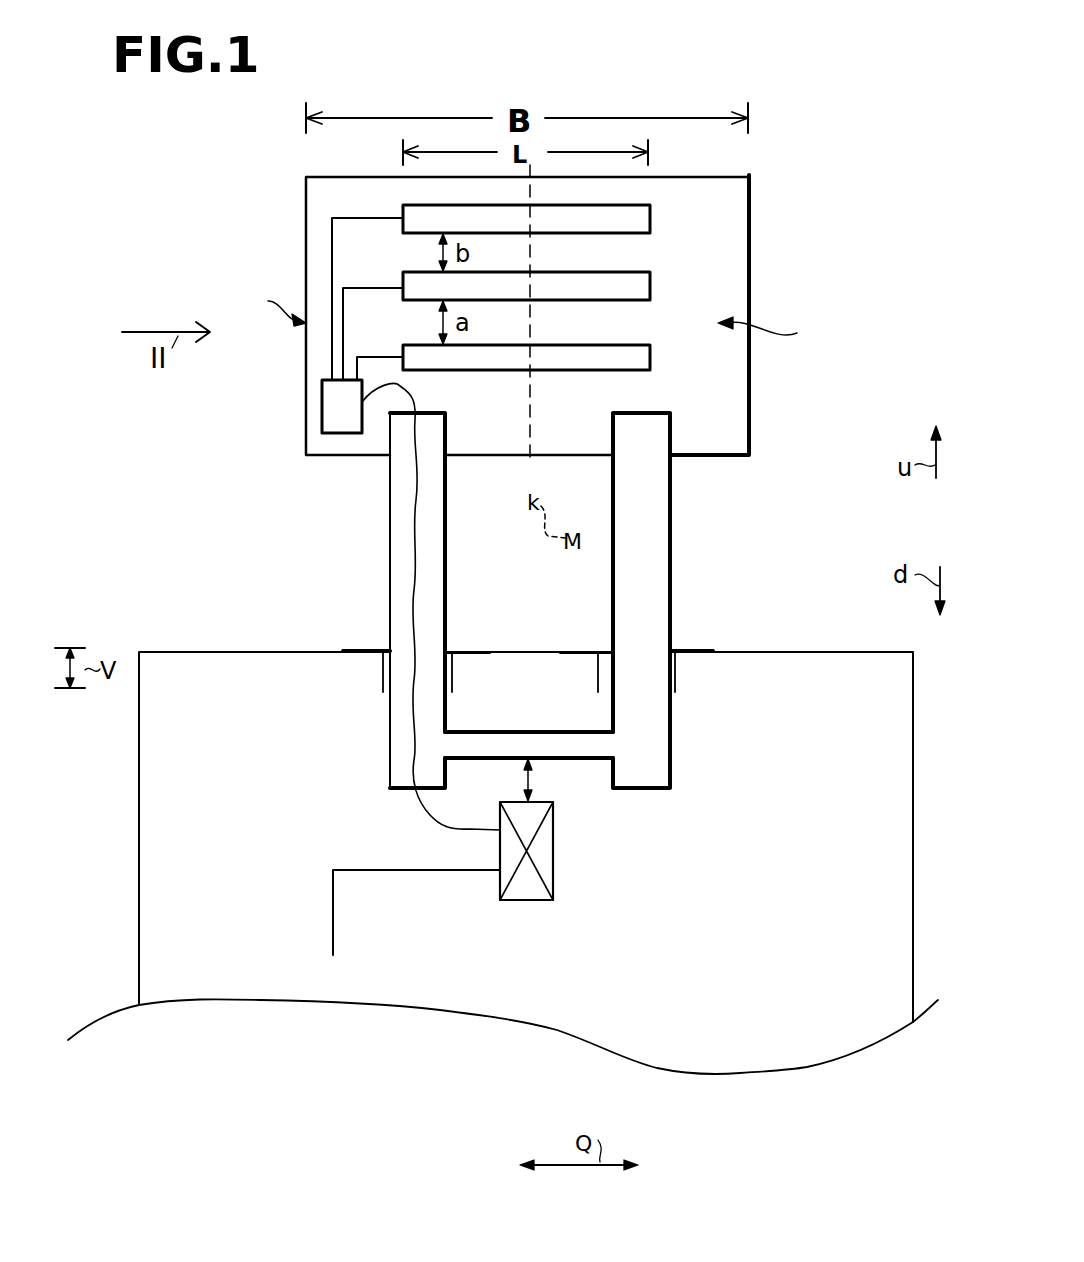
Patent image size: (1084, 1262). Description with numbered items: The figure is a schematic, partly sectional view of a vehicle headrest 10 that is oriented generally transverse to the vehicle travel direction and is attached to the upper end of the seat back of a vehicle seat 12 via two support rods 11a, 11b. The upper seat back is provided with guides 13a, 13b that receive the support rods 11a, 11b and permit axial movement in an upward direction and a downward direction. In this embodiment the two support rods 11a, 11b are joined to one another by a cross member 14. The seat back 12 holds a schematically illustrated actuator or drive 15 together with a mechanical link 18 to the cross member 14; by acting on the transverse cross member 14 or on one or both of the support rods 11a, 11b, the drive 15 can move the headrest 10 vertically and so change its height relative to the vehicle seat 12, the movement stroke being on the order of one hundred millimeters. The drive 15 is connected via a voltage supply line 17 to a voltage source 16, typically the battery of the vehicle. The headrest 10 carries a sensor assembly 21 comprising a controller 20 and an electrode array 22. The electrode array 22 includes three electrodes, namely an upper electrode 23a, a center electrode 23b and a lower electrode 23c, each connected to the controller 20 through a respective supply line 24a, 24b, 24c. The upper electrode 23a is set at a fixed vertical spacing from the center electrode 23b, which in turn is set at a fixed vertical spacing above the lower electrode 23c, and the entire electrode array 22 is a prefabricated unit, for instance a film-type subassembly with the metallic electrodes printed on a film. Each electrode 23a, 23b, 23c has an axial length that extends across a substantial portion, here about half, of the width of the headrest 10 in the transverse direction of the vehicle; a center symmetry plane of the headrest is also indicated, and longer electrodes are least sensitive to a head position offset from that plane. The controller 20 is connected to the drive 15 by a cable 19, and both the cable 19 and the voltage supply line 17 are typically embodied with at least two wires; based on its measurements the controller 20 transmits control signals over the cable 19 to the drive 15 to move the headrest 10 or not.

The headrest 10 is at (736, 243).
The support rod 11a is at (405, 551).
The support rod 11b is at (650, 545).
The vehicle seat 12 is at (840, 675).
The guide 13a is at (385, 668).
The guide 13b is at (672, 680).
The cross member 14 is at (497, 746).
The drive 15 is at (553, 861).
The voltage source 16 is at (310, 995).
The voltage supply line 17 is at (370, 869).
The mechanical link 18 is at (535, 791).
The cable 19 is at (405, 477).
The controller 20 is at (335, 408).
The sensor assembly 21 is at (269, 308).
The electrode array 22 is at (780, 331).
The upper electrode 23a is at (652, 212).
The center electrode 23b is at (652, 286).
The lower electrode 23c is at (652, 358).
The supply line 24a is at (332, 240).
The supply line 24b is at (343, 290).
The supply line 24c is at (357, 350).